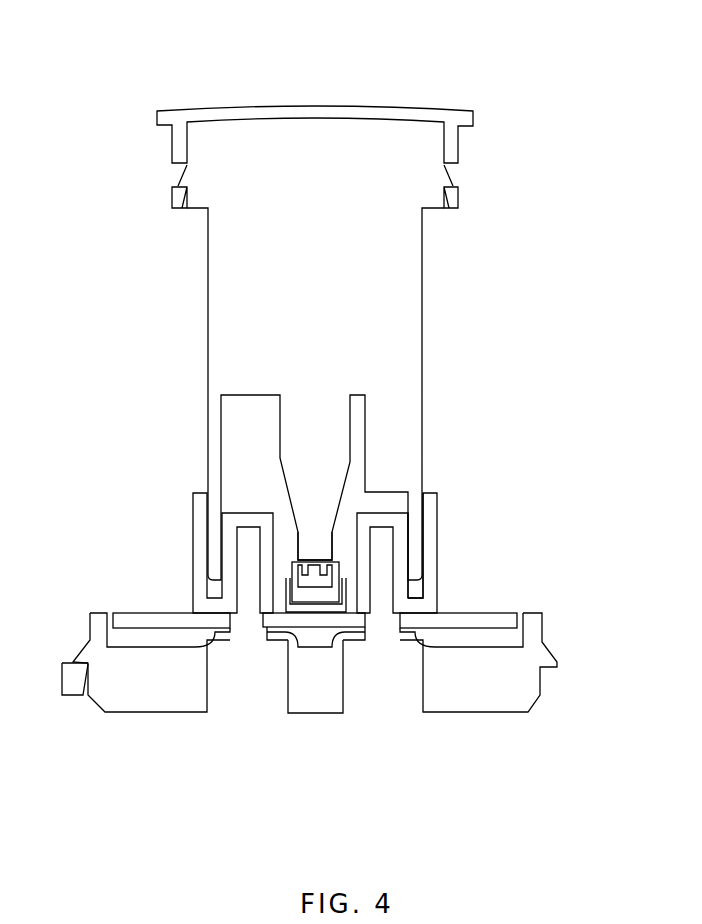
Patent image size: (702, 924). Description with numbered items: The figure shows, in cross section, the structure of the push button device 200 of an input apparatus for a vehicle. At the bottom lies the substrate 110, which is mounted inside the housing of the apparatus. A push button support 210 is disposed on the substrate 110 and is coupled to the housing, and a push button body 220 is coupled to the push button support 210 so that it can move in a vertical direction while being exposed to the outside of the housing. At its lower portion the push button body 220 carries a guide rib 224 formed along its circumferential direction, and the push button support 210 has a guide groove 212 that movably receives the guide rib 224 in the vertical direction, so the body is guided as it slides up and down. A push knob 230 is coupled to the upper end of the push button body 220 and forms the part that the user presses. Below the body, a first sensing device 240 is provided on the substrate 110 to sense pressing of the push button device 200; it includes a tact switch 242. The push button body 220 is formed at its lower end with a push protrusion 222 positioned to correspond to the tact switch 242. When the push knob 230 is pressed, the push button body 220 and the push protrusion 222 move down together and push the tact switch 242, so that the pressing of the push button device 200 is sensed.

The push button device 200 is at (175, 87).
The push knob 230 is at (305, 104).
The push button body 220 is at (250, 304).
The push protrusion 222 is at (315, 548).
The push button support 210 is at (432, 507).
The guide groove 212 is at (417, 562).
The guide rib 224 is at (413, 565).
The first sensing device 240 is at (287, 598).
The tact switch 242 is at (312, 592).
The substrate 110 is at (486, 620).